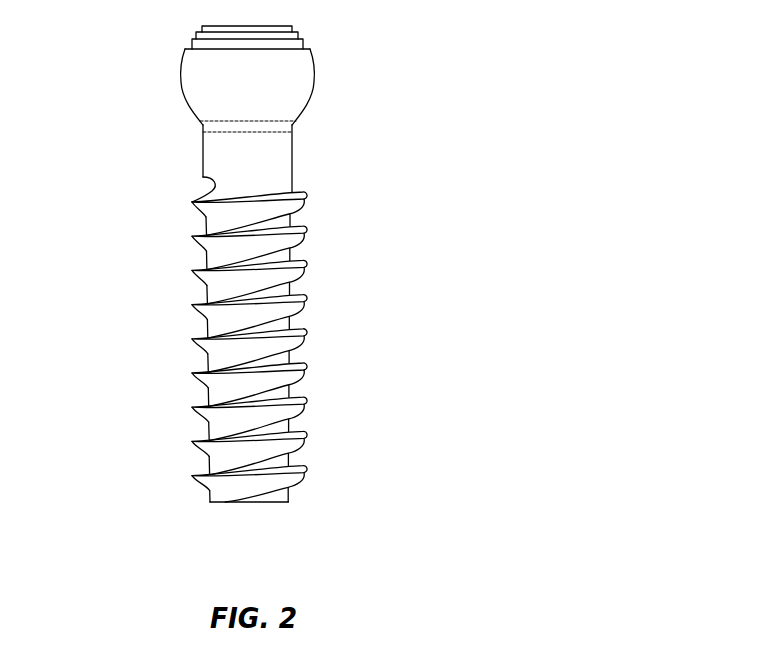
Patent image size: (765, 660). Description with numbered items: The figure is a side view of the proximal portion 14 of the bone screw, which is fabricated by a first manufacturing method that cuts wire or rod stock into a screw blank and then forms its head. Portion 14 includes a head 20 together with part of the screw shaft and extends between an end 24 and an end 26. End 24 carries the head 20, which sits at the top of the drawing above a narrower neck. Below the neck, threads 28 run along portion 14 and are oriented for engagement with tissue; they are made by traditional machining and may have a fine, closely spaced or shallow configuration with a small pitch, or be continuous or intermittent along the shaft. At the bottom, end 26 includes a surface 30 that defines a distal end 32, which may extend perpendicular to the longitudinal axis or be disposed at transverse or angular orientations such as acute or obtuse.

The proximal portion 14 is at (56, 50).
The head 20 is at (373, 48).
The end 24 is at (232, 128).
The end 26 is at (215, 493).
The threads 28 is at (303, 372).
The surface 30 is at (225, 503).
The distal end 32 is at (253, 505).